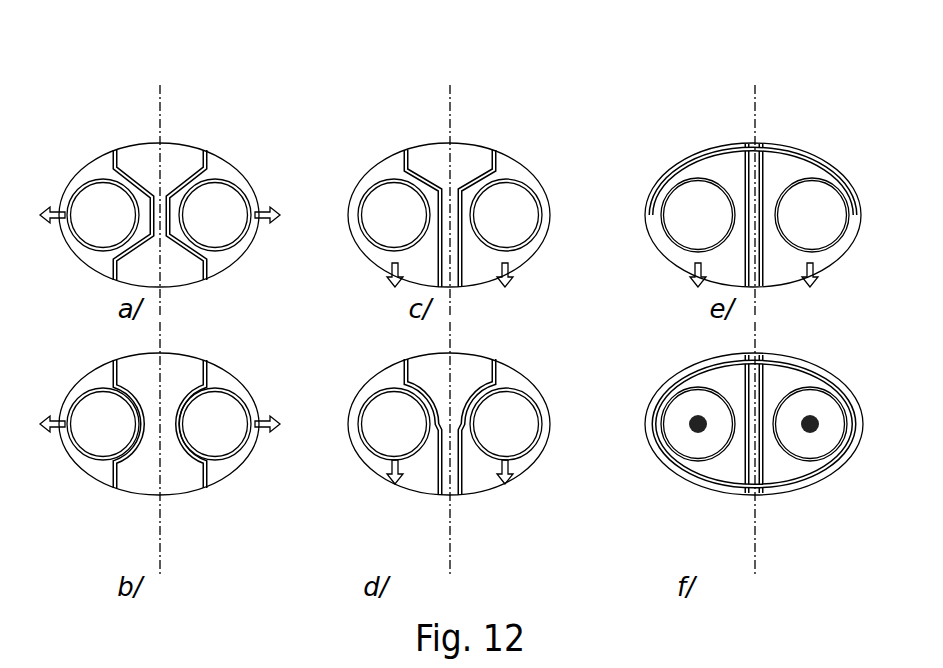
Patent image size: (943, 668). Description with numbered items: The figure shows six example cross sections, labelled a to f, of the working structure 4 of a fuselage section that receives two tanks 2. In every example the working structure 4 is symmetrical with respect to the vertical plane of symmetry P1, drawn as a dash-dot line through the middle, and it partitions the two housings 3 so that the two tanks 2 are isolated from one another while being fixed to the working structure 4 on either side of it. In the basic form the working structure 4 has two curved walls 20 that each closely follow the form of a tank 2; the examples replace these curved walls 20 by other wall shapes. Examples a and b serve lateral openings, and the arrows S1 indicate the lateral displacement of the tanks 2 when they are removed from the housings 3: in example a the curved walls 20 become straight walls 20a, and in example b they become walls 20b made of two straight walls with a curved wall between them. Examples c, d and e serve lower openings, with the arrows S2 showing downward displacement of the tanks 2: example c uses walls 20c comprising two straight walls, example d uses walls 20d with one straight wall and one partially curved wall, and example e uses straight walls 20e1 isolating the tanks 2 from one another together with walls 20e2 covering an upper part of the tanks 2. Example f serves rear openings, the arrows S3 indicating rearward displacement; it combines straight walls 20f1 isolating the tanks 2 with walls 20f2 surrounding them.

The tank 2 is at (216, 213).
The housing 3 is at (95, 178).
The working structure 4 is at (178, 145).
The curved wall 20 is at (780, 360).
The straight wall 20a is at (182, 183).
The wall 20b is at (125, 462).
The wall 20c is at (472, 178).
The wall 20d is at (455, 462).
The straight wall 20e1 is at (755, 142).
The wall 20e2 is at (665, 183).
The straight wall 20f1 is at (763, 448).
The wall 20f2 is at (670, 392).
The vertical plane of symmetry P1 is at (160, 118).
The direction of lateral displacement S1 is at (45, 205).
The direction of downward displacement S2 is at (385, 279).
The direction of rearward displacement S3 is at (818, 420).